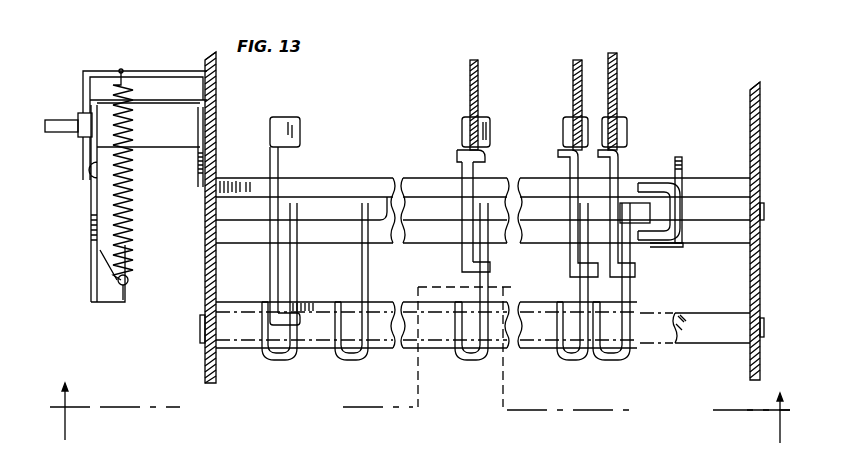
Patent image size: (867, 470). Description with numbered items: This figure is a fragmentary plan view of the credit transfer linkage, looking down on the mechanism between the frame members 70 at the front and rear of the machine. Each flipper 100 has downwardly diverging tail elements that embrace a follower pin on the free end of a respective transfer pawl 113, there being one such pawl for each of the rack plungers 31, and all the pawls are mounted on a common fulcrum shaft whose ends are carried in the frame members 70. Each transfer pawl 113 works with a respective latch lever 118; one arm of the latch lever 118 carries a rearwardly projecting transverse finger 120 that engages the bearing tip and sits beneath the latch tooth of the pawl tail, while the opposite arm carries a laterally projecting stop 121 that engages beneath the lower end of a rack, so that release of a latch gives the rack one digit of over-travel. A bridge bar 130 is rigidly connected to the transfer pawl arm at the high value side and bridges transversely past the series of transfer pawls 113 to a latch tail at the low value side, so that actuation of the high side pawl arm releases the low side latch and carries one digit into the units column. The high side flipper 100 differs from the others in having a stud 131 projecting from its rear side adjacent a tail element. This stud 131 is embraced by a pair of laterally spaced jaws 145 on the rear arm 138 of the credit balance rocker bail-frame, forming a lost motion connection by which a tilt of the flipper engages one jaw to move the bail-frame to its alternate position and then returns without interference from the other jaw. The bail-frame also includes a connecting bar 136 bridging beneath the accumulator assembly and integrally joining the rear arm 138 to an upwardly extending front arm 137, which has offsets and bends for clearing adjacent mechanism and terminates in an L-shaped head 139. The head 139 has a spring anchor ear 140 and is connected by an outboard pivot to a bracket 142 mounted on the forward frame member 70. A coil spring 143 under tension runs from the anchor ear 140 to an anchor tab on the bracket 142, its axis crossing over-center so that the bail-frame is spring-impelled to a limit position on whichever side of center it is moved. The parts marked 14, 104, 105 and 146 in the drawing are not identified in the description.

The section line 14- 14 is at (420, 413).
The rack plunger 31 is at (478, 82).
The frame member 70 is at (207, 362).
The flipper 100 is at (480, 158).
The wire top bend 104 is at (457, 156).
The wire foot 105 is at (490, 266).
The transfer pawl 113 is at (362, 268).
The latch lever 118 is at (280, 172).
The transverse finger 120 is at (478, 332).
The stop 121 is at (295, 142).
The bridge bar 130 is at (413, 296).
The stud 131 is at (645, 205).
The connecting bar 136 is at (370, 186).
The arm 137 is at (145, 148).
The arm 138 is at (684, 244).
The head 139 is at (90, 247).
The spring anchor ear 140 is at (112, 302).
The bracket 142 is at (158, 57).
The coil spring 143 is at (135, 225).
The jaws 145 is at (665, 247).
The plunger 146 is at (50, 118).